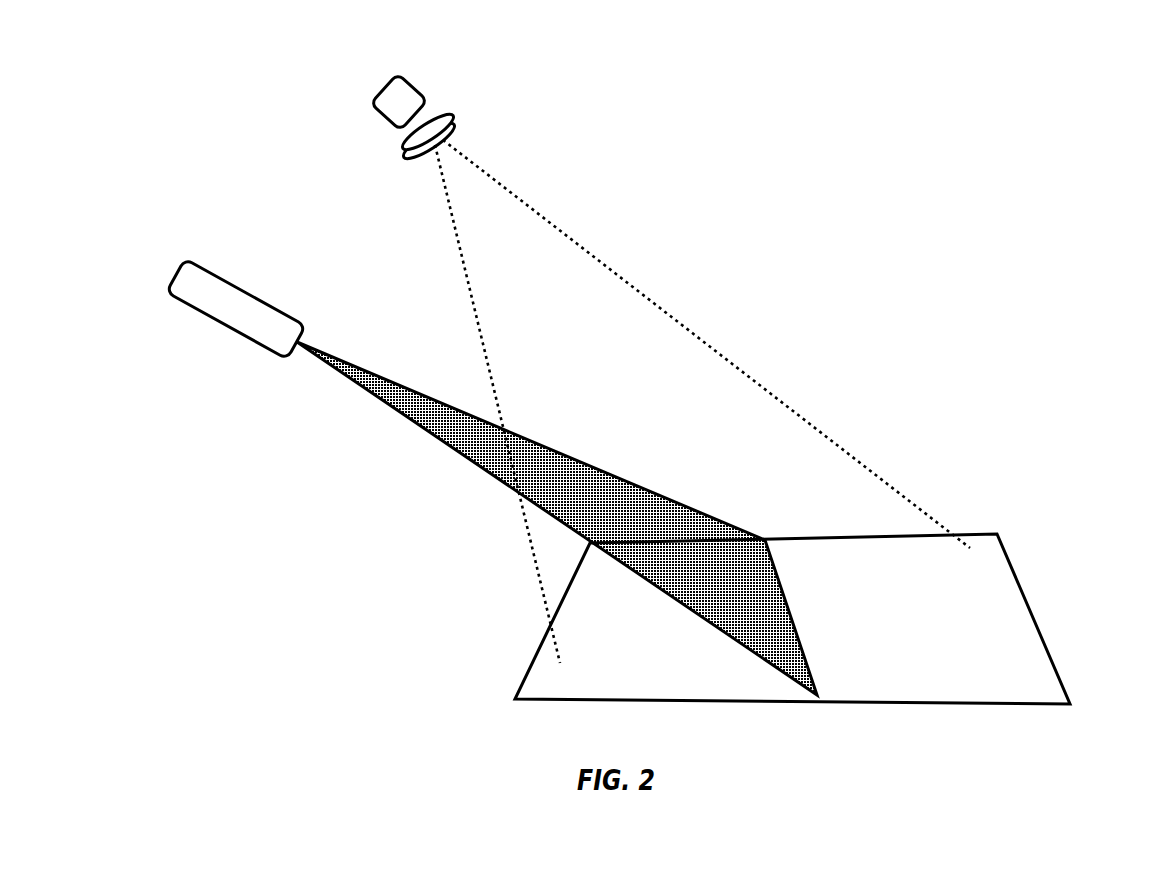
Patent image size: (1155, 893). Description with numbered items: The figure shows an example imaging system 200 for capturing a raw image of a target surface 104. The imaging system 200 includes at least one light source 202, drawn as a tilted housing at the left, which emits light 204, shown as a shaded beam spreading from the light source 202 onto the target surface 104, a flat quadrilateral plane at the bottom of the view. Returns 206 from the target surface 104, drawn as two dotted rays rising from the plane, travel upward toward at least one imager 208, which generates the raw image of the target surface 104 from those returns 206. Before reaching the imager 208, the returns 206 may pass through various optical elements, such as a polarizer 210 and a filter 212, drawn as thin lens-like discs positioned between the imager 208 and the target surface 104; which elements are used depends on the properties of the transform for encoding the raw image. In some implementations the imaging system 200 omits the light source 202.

The target surface 104 is at (1027, 597).
The imaging system 200 is at (793, 183).
The light source 202 is at (180, 272).
The light 204 is at (370, 365).
The returns 206 is at (458, 252).
The imager 208 is at (382, 88).
The polarizer 210 is at (461, 137).
The filter 212 is at (403, 156).